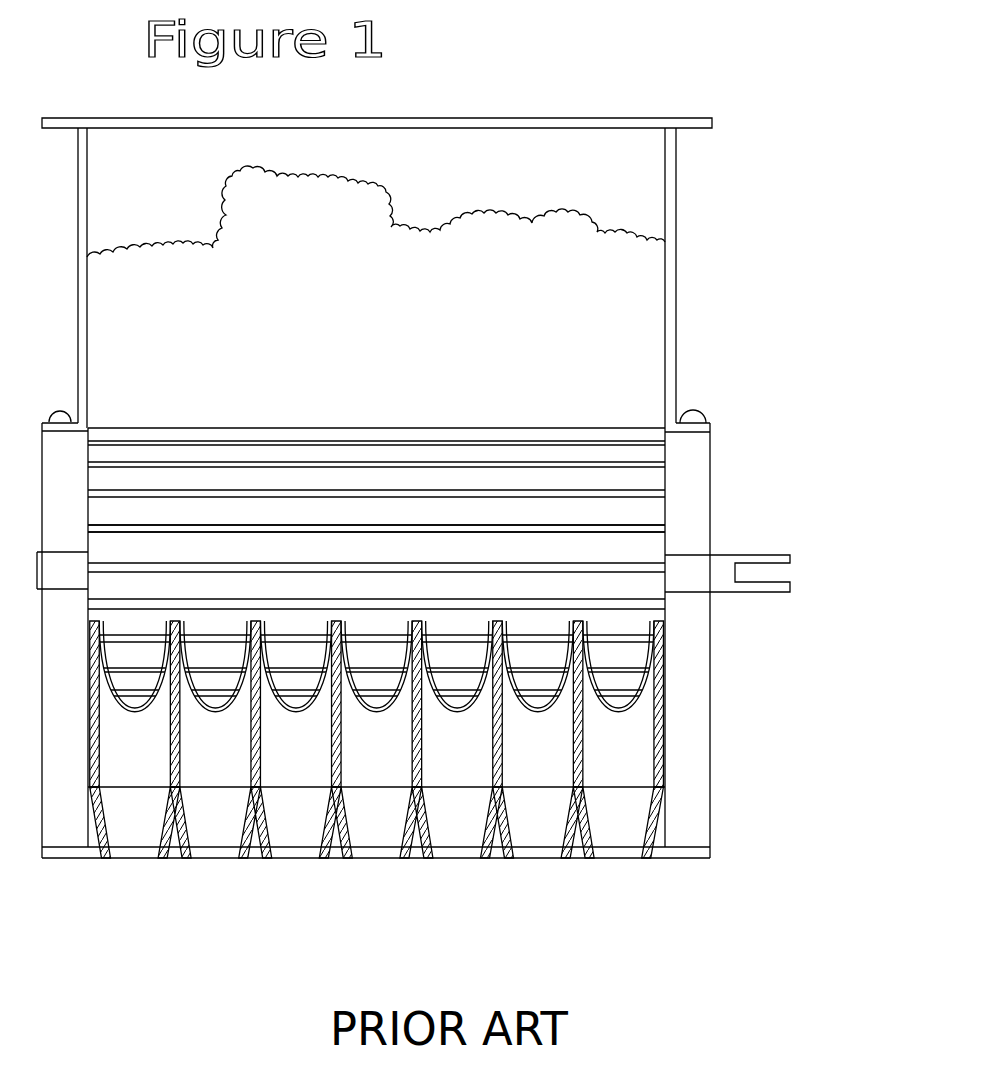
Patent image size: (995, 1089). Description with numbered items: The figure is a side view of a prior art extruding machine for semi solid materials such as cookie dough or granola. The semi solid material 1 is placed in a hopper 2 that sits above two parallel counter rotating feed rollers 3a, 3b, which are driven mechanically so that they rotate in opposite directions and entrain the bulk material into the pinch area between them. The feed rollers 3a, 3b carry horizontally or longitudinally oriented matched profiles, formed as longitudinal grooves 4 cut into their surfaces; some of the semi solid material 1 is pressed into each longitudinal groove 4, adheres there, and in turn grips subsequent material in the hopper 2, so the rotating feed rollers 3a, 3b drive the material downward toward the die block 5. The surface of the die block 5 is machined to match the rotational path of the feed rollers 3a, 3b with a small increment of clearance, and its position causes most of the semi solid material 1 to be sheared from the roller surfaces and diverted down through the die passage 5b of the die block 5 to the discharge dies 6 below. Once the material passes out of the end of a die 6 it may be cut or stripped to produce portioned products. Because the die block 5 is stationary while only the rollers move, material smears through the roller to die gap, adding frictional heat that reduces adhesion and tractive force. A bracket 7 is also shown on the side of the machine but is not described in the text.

The semi solid material 1 is at (376, 263).
The hopper 2 is at (380, 118).
The counter rotating feed roller 3a is at (667, 515).
The counter rotating feed roller 3b is at (818, 527).
The longitudinal groove 4 is at (652, 482).
The die block 5 is at (660, 773).
The die passage 5b is at (620, 730).
The discharge die 6 is at (657, 830).
The support bracket 7 is at (735, 570).